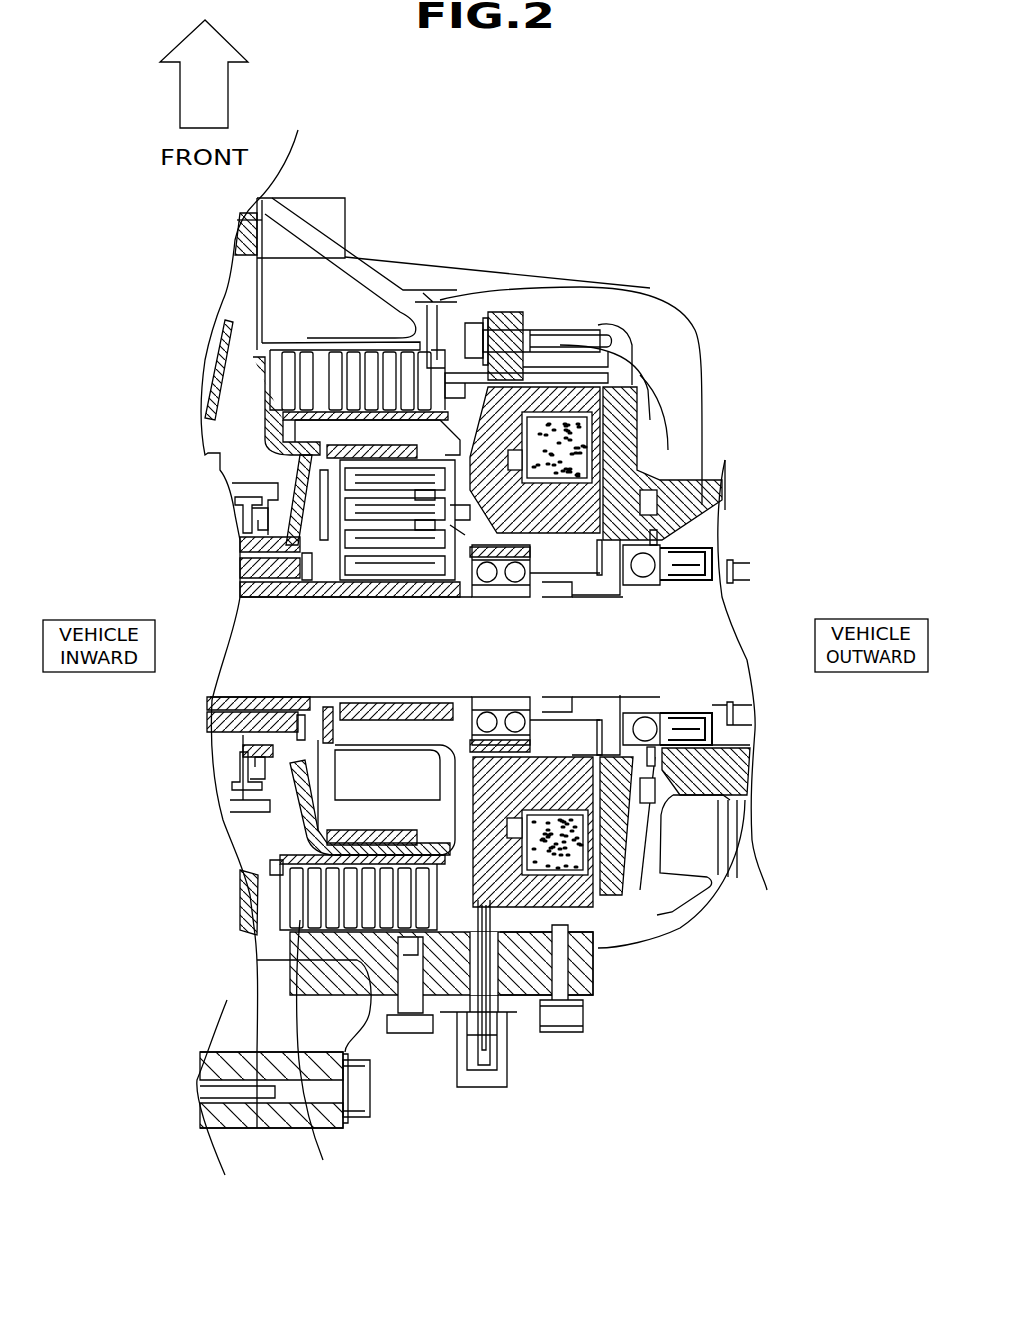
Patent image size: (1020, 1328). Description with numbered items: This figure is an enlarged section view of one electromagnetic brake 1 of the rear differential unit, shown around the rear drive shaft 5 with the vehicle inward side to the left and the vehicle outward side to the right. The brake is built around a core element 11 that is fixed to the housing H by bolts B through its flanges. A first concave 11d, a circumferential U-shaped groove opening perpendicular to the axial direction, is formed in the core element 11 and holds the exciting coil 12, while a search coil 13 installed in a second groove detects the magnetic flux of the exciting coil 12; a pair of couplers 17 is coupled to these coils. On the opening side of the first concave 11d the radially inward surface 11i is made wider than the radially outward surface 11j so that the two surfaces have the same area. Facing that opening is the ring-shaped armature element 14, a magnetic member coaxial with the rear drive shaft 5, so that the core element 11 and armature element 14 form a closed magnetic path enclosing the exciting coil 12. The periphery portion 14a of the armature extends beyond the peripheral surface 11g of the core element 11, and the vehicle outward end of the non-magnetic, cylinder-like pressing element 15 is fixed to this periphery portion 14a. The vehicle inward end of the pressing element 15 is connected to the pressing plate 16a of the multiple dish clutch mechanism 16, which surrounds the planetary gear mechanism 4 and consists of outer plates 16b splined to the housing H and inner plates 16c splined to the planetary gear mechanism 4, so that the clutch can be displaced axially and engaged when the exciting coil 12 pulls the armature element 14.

The electromagnetic brake 1 is at (628, 463).
The planetary gear mechanism 4 is at (258, 903).
The rear drive shaft 5 is at (692, 643).
The core element 11 is at (700, 440).
The first concave 11d is at (600, 416).
The peripheral surface 11g is at (580, 935).
The surface lying radially inward 11i is at (633, 780).
The surface lying radially outward 11j is at (578, 915).
The exciting coil 12 is at (621, 427).
The search coil 13 is at (470, 392).
The armature element 14 is at (545, 478).
The periphery portion 14a is at (592, 895).
The pressing element 15 is at (495, 340).
The multiple dish clutch mechanism 16 is at (402, 296).
The pressing plate 16a is at (420, 340).
The outer plates 16b is at (340, 358).
The inner plates 16c is at (362, 360).
The coupler 17 is at (500, 1055).
The bolt B is at (552, 335).
The housing H is at (618, 326).